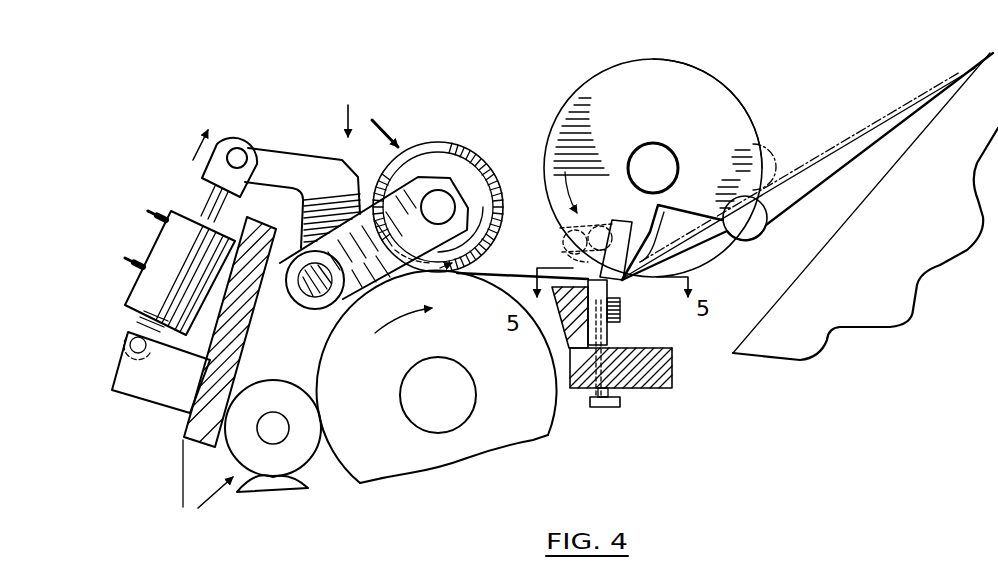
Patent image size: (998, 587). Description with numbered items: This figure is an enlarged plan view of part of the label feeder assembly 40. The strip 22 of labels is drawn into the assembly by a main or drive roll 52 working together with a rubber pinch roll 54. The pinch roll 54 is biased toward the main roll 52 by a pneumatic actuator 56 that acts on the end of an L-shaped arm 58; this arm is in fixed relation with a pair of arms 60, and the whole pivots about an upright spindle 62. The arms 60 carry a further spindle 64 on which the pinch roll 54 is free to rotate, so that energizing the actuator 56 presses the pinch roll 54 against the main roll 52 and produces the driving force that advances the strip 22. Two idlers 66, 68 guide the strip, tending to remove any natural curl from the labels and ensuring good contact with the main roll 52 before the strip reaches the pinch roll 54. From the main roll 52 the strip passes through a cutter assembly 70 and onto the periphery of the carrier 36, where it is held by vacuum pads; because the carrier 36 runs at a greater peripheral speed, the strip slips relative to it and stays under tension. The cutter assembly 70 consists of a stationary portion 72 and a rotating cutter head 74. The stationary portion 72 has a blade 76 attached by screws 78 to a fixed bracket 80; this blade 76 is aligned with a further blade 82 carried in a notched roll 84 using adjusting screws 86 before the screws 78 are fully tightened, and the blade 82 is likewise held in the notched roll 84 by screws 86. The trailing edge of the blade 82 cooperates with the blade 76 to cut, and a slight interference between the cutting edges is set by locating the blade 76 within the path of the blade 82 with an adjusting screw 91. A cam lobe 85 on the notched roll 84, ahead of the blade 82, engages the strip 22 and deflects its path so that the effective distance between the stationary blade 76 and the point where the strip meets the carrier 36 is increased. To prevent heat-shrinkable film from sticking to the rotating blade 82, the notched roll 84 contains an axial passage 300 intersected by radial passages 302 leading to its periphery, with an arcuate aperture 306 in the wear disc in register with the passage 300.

The strip of labels 22 is at (510, 272).
The carrier 36 is at (810, 206).
The label feeder assembly 40 is at (369, 114).
The main roll 52 is at (537, 427).
The pinch roll 54 is at (467, 147).
The pneumatic actuator 56 is at (142, 302).
The L-shaped arm 58 is at (300, 157).
The arms 60 is at (425, 193).
The upright spindle 62 is at (306, 309).
The spindle 64 is at (443, 202).
The idler 66 is at (287, 488).
The idler 68 is at (303, 447).
The cutter assembly 70 is at (690, 325).
The stationary portion 72 is at (630, 395).
The rotating cutter head 74 is at (712, 65).
The blade 76 is at (603, 333).
The screws 78 is at (613, 307).
The fixed bracket 80 is at (655, 385).
The blade 82 is at (622, 227).
The notched roll 84 is at (733, 115).
The cam lobe 85 is at (738, 224).
The adjusting screws 86 is at (670, 250).
The adjusting screw 91 is at (607, 408).
The axial passage 300 is at (562, 233).
The radial passages 302 is at (574, 252).
The arcuate aperture 306 is at (560, 215).